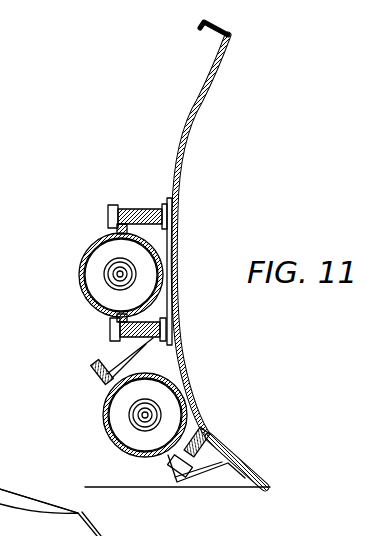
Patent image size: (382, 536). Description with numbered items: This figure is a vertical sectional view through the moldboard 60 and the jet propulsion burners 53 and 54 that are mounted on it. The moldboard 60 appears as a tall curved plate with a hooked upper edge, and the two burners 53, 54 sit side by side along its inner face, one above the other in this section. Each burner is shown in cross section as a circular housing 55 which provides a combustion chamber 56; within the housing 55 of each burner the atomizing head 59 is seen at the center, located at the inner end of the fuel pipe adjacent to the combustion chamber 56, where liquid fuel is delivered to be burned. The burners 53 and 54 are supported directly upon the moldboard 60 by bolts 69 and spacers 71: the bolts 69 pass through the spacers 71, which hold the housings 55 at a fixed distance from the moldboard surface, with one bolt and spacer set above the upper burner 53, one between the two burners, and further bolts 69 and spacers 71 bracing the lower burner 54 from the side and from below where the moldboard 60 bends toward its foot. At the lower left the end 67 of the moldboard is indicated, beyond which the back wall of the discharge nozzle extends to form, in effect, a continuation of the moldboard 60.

The jet propulsion burner 53 is at (85, 240).
The jet propulsion burner 54 is at (101, 417).
The housing 55 is at (83, 264).
The combustion chamber 56 is at (97, 285).
The atomizing head 59 is at (117, 274).
The moldboard 60 is at (193, 113).
The end of the moldboard 67 is at (13, 508).
The bolt 69 is at (109, 212).
The spacer 71 is at (137, 208).